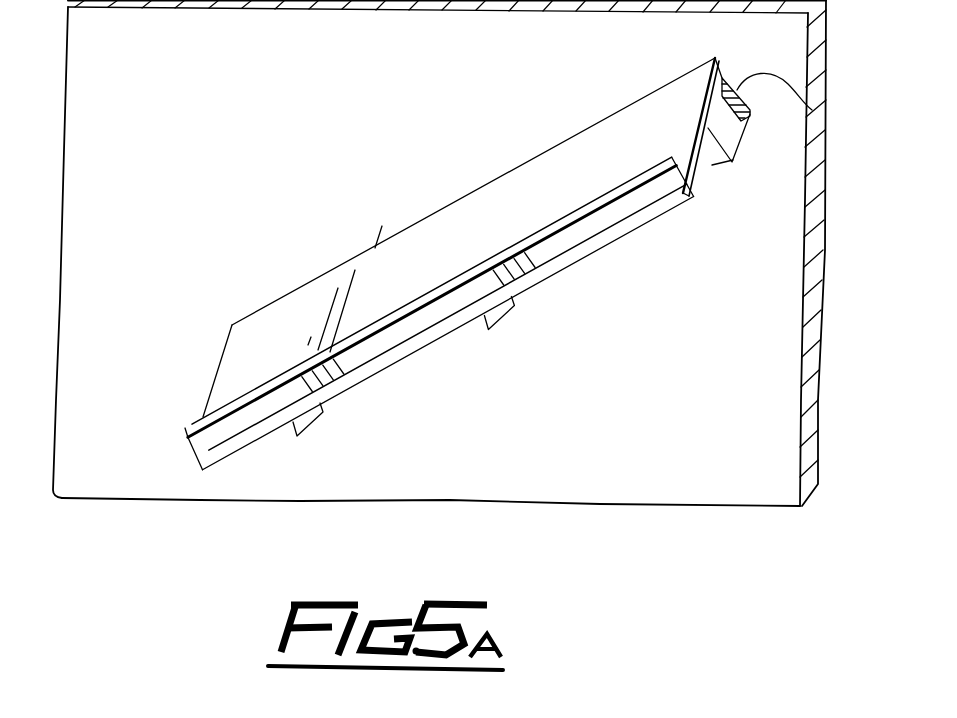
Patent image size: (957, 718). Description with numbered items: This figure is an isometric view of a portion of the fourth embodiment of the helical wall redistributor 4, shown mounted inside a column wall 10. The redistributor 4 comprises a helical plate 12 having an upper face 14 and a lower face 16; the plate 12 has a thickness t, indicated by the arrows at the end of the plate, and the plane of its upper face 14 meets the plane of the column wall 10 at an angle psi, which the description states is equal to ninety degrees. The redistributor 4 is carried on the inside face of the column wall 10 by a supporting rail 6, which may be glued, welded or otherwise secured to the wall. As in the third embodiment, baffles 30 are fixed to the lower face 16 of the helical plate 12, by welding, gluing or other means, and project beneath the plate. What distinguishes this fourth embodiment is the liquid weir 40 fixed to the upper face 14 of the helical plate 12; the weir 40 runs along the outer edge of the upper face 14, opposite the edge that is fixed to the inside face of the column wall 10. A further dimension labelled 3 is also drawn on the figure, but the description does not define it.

The height dimension 3 is at (225, 329).
The helical wall redistributor 4 is at (452, 171).
The supporting rail 6 is at (812, 110).
The column wall 10 is at (777, 212).
The helical plate 12 is at (384, 240).
The upper face 14 is at (305, 310).
The lower face 16 is at (662, 213).
The baffles 30 is at (313, 423).
The liquid weir 40 is at (622, 212).
The thickness t is at (667, 117).
The angle psi is at (358, 385).